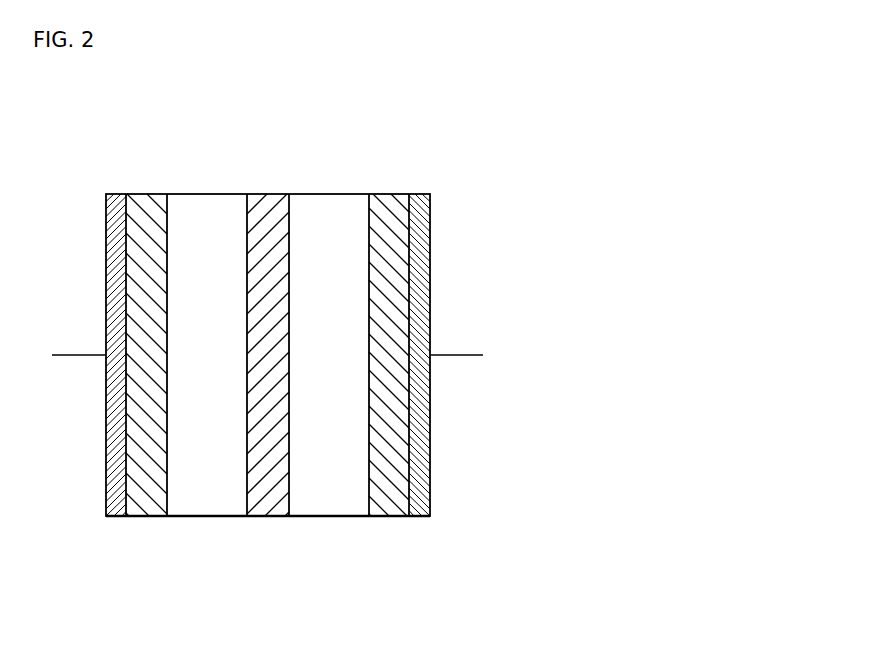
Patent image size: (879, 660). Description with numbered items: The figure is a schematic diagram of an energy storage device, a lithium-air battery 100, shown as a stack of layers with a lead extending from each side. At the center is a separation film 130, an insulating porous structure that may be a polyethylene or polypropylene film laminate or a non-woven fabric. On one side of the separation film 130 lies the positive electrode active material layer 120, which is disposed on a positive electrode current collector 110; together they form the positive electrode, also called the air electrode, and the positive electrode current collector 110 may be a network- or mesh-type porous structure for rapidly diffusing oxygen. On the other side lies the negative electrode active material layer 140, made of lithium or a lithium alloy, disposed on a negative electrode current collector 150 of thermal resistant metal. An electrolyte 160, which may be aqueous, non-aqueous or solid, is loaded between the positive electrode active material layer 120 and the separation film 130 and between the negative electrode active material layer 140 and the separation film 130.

The all-solid-state battery 100 is at (393, 176).
The positive electrode current collector 110 is at (113, 516).
The positive electrode active material layer 120 is at (147, 516).
The separation film 130 is at (268, 516).
The negative electrode active material layer 140 is at (383, 516).
The negative electrode current collector 150 is at (418, 516).
The electrolyte 160 is at (208, 516).